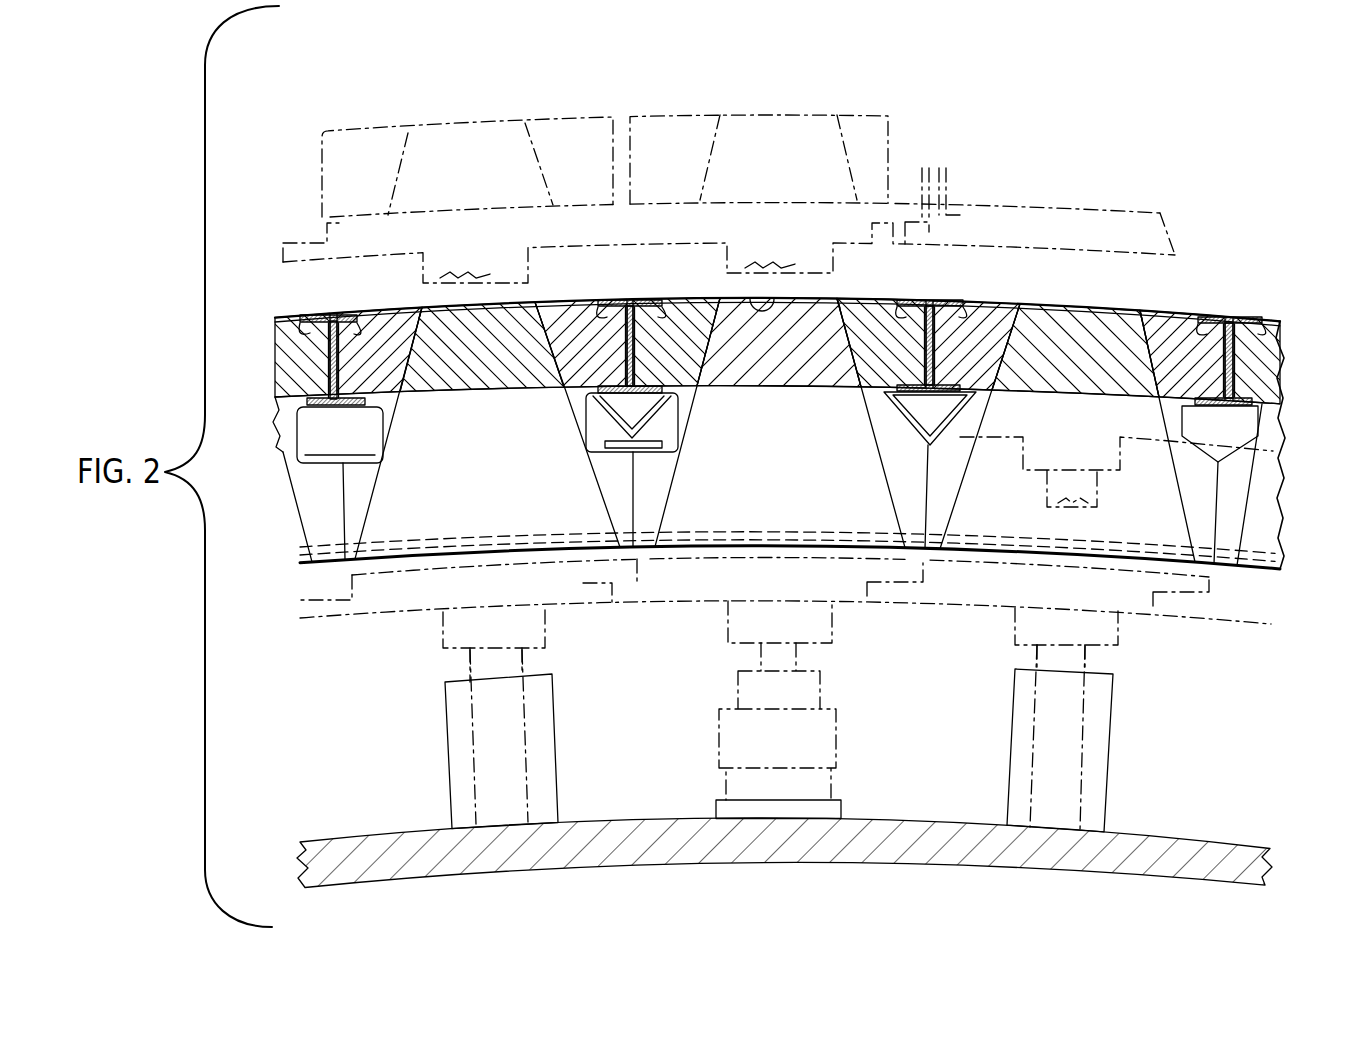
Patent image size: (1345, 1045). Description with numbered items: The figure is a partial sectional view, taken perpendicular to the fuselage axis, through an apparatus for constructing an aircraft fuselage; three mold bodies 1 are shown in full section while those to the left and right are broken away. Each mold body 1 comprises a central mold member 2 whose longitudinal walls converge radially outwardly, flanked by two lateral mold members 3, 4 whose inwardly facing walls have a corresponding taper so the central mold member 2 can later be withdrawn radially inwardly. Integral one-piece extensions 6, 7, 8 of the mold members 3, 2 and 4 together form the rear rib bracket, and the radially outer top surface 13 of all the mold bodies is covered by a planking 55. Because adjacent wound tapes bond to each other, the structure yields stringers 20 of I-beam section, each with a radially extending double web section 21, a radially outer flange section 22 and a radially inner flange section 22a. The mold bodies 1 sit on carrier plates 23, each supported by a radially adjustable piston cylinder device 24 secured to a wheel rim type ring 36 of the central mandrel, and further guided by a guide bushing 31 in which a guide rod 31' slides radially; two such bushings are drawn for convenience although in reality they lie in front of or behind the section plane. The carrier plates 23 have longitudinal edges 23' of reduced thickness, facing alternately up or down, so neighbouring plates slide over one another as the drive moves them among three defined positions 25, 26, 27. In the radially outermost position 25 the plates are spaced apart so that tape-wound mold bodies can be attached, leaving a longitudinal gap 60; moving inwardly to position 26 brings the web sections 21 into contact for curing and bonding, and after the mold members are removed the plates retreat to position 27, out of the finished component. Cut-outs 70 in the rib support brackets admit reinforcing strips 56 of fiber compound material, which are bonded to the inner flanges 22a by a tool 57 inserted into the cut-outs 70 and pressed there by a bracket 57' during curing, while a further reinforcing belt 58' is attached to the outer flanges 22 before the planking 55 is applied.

The mold body 1 is at (416, 300).
The central mold member 2 is at (1123, 363).
The lateral mold member 3 is at (987, 361).
The lateral mold member 4 is at (1202, 368).
The extension 6 is at (363, 507).
The extension 7 is at (446, 516).
The extension 8 is at (327, 497).
The radially outer top surface 13 is at (758, 303).
The stringer 20 is at (322, 353).
The double web section 21 is at (365, 378).
The radially outer flange section 22 is at (358, 318).
The radially inner flange section 22a is at (305, 400).
The carrier plate 23 is at (769, 402).
The longitudinal edge 23' is at (754, 410).
The piston cylinder device 24 is at (720, 793).
The radially outermost position 25 is at (283, 250).
The intermediate position 26 is at (293, 427).
The radially inner position 27 is at (300, 612).
The guide bushing 31 is at (801, 738).
The guide rod 31' is at (817, 660).
The wheel rim type ring 36 is at (908, 830).
The planking 55 is at (300, 322).
The reinforcing strip 56 is at (778, 485).
The tool 57 is at (898, 470).
The bracket 57' is at (669, 470).
The reinforcing belt 58' is at (781, 333).
The gap 60 is at (624, 130).
The cut-out 70 is at (373, 450).